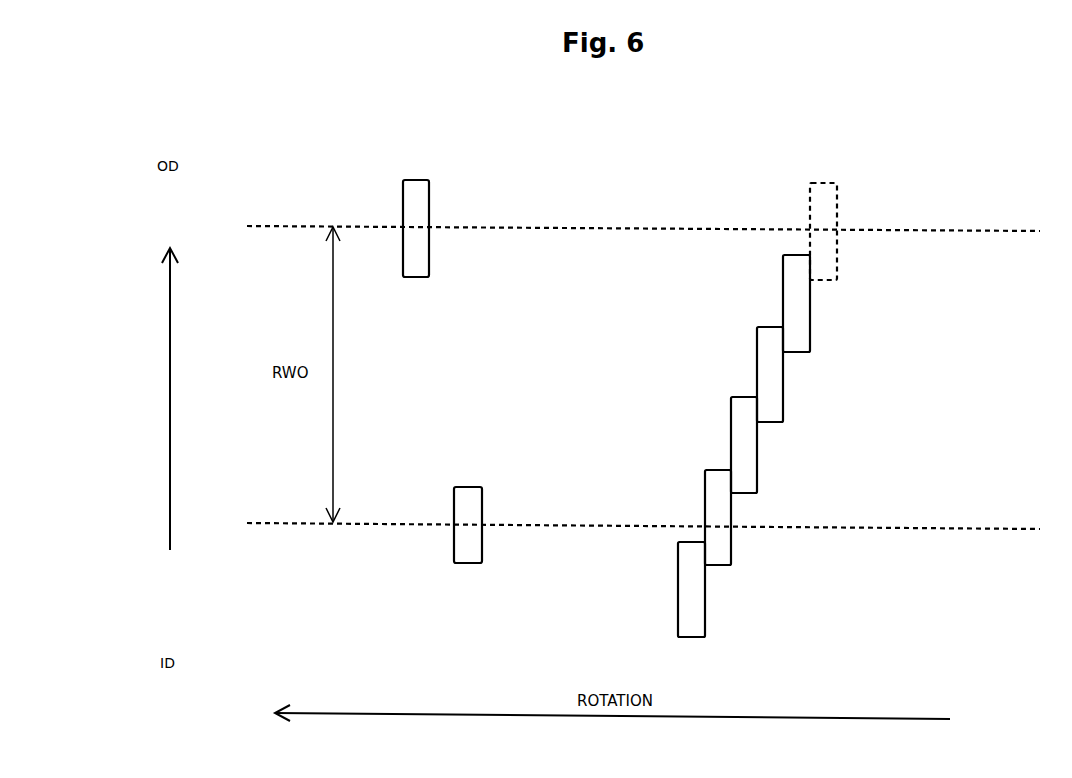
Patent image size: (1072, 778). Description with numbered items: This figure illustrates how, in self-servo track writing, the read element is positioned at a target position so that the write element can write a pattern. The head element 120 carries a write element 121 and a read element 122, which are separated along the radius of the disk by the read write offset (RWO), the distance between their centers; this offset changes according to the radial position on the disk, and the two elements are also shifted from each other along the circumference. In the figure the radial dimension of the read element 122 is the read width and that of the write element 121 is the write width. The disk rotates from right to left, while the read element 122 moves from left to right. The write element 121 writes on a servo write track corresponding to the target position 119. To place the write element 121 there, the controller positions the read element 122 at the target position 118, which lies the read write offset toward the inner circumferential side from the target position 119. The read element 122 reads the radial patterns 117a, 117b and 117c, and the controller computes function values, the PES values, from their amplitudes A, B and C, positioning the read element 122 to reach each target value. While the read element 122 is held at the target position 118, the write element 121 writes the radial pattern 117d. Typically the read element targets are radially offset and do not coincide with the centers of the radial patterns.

The radial pattern 117a is at (705, 620).
The radial pattern 117b is at (731, 553).
The radial pattern 117c is at (757, 478).
The radial pattern 117d is at (838, 195).
The target position 118 is at (920, 530).
The target position 119 is at (918, 232).
The head element 120 is at (527, 320).
The write element 121 is at (428, 265).
The read element 122 is at (468, 487).